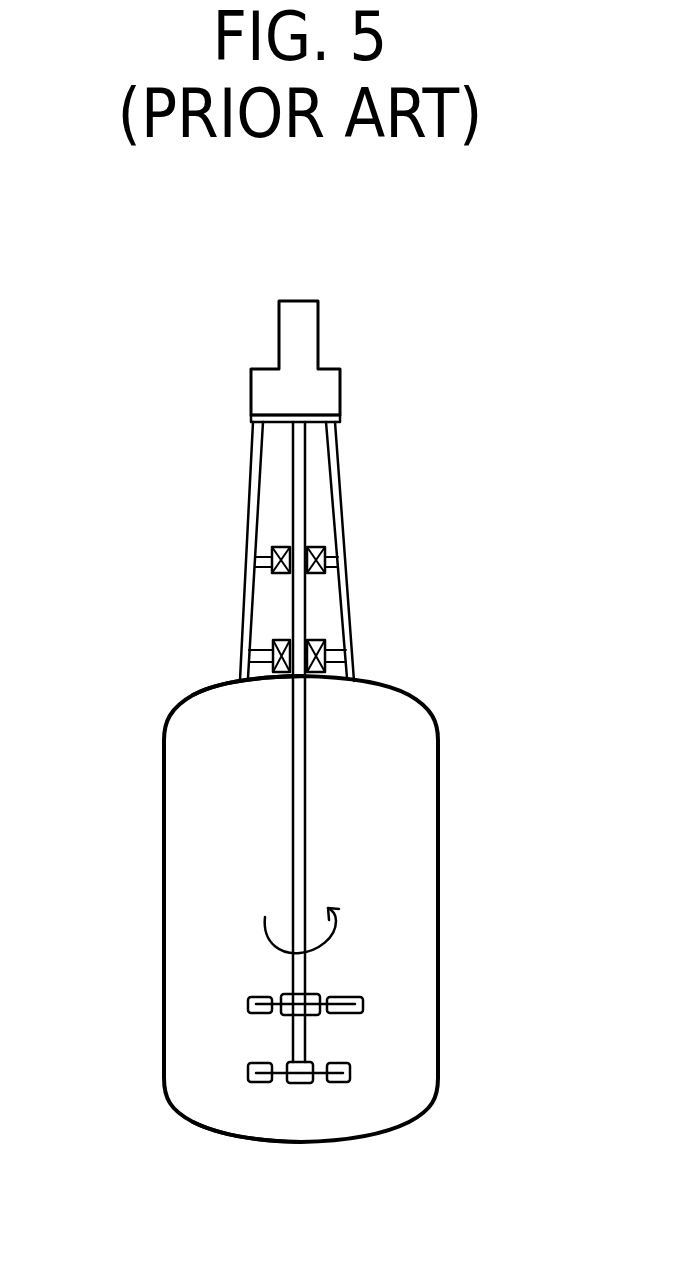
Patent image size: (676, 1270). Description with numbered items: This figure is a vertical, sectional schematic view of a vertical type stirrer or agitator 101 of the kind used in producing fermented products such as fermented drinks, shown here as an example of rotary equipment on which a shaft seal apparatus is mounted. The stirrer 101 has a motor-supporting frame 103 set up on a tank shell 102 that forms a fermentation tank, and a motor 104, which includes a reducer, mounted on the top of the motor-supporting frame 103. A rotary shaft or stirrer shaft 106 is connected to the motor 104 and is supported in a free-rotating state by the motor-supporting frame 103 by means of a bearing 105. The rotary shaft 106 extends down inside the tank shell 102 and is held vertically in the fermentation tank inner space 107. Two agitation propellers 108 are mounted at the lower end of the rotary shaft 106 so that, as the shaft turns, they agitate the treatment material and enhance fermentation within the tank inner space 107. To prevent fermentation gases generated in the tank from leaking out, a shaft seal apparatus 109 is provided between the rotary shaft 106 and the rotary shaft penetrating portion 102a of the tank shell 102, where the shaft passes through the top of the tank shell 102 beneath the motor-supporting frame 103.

The vertical type stirrer 101 is at (446, 728).
The tank shell 102 is at (164, 767).
The rotary shaft penetrating portion 102a is at (278, 683).
The motor-supporting frame 103 is at (342, 498).
The motor 104 is at (318, 342).
The bearing 105 is at (282, 546).
The rotary shaft 106 is at (307, 848).
The fermentation tank inner space 107 is at (195, 862).
The agitation propeller 108 is at (363, 1003).
The shaft seal apparatus 109 is at (326, 657).